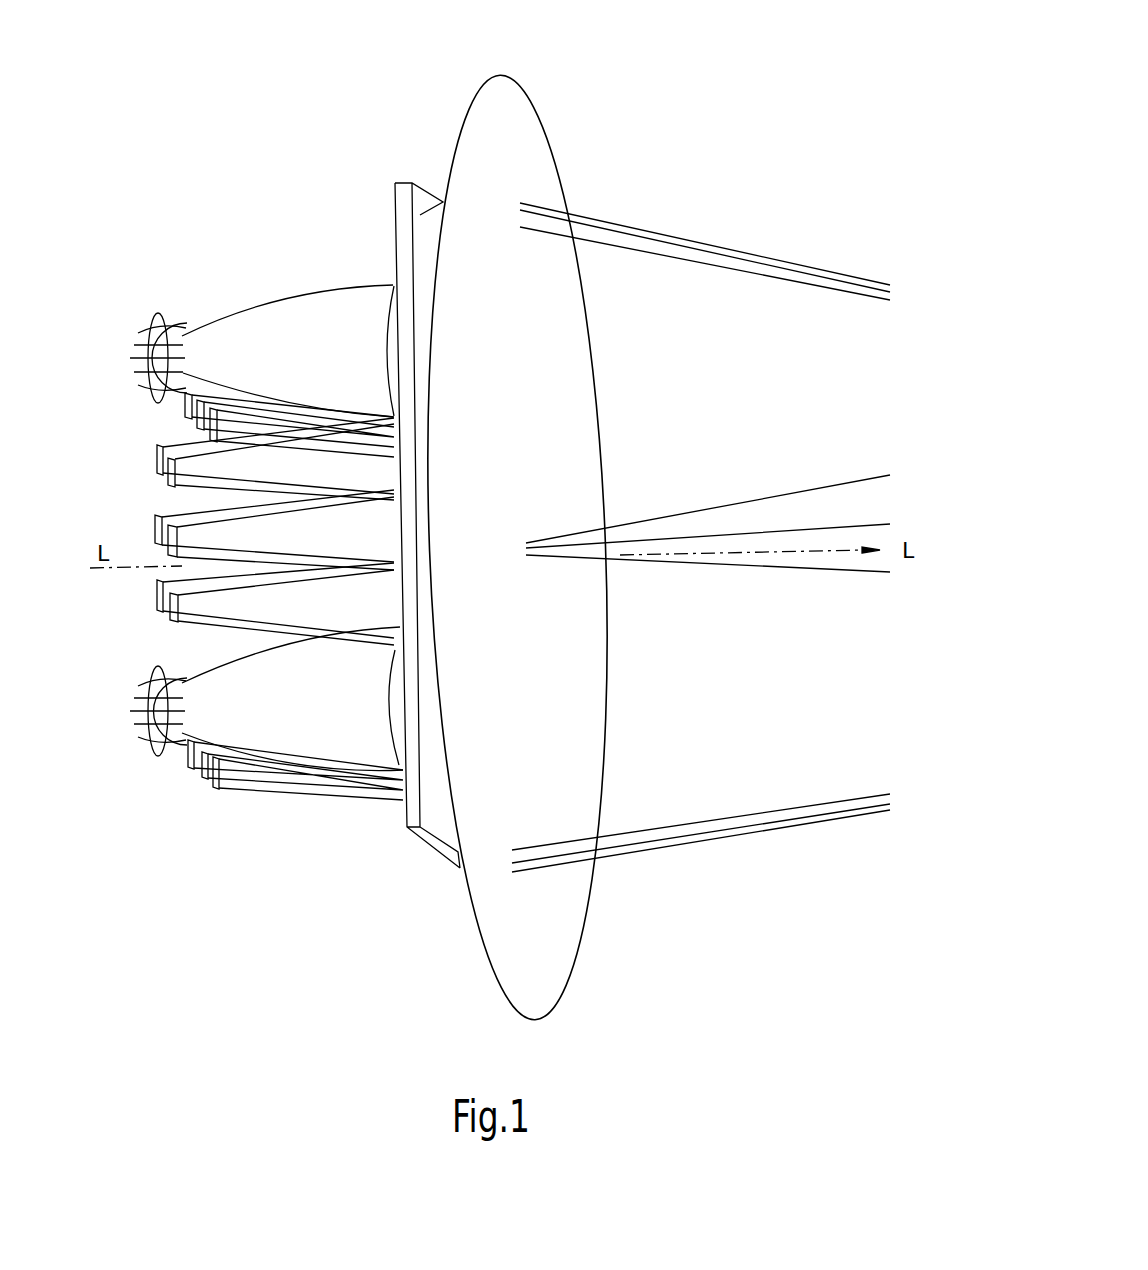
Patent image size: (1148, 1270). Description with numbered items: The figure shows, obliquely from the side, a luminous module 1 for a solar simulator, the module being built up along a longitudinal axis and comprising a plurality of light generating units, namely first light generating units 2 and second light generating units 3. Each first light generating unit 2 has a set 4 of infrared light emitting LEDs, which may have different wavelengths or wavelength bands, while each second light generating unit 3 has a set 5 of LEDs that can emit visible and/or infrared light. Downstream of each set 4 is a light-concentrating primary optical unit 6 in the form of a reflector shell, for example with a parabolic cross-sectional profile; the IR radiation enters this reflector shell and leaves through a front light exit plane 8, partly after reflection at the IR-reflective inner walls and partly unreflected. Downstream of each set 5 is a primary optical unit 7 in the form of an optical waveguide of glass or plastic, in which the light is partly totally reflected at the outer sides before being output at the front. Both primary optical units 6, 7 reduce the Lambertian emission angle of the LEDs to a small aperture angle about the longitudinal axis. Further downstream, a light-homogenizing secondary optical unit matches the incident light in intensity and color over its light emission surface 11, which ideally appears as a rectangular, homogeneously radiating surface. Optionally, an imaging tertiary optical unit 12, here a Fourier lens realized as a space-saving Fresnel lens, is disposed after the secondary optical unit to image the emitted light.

The luminous module 1 is at (721, 117).
The first light generating unit 2 is at (221, 277).
The second light generating unit 3 is at (226, 461).
The set of IR LEDs 4 is at (160, 314).
The set of LEDs 5 is at (157, 457).
The primary optical unit 6 is at (253, 337).
The primary optical unit 7 is at (302, 467).
The light exit plane 8 is at (388, 313).
The light emission surface 11 is at (432, 195).
The tertiary optical unit 12 is at (527, 107).